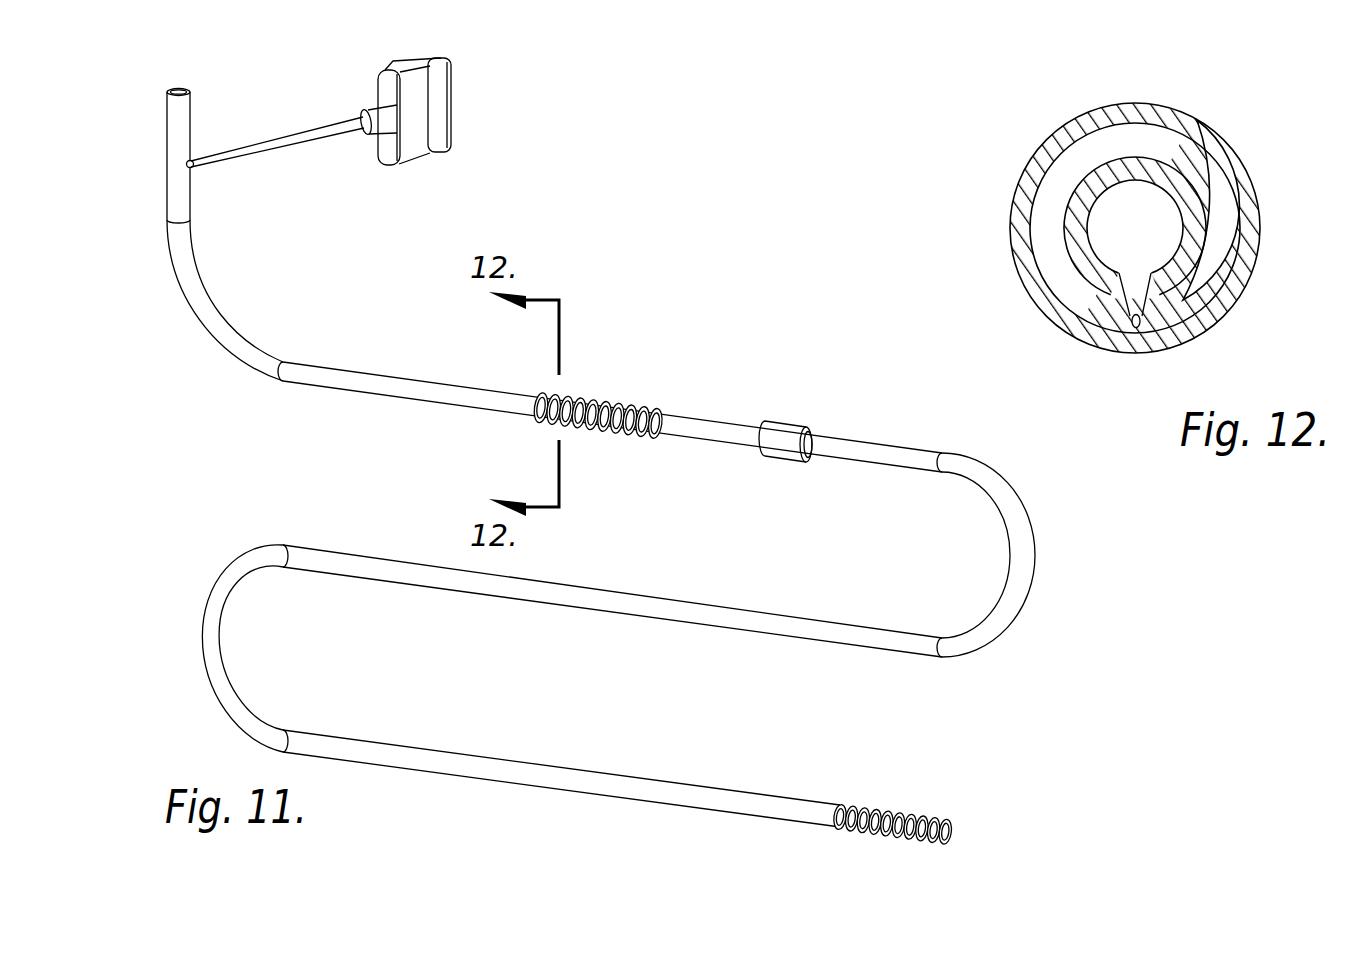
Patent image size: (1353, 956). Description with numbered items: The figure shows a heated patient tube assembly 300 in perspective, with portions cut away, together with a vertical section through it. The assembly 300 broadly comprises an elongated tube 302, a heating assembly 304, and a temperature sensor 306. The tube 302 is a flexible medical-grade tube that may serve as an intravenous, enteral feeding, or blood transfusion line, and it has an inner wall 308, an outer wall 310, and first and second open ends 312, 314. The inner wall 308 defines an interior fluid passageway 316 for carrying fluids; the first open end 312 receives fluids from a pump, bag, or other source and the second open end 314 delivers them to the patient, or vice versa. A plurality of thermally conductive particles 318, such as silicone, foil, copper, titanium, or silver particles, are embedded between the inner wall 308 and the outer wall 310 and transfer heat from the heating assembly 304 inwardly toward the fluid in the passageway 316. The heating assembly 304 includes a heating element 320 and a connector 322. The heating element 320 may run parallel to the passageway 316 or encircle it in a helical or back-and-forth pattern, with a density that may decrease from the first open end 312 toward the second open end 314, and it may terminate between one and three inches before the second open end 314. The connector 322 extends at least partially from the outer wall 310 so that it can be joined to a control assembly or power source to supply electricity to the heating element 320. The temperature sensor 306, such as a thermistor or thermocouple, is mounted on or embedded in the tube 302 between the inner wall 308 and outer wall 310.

In FIG. 11, the heated patient tube assembly 300 is at (632, 449).
In FIG. 11, the elongated tube 302 is at (358, 386).
In FIG. 12, the elongated tube 302 is at (1040, 108).
In FIG. 11, the heating assembly 304 is at (603, 370).
In FIG. 11, the temperature sensor 306 is at (787, 436).
In FIG. 12, the inner wall 308 is at (1180, 342).
In FIG. 12, the outer wall 310 is at (1245, 288).
In FIG. 11, the first open end 312 is at (205, 79).
In FIG. 11, the second open end 314 is at (977, 814).
In FIG. 12, the interior fluid passageway 316 is at (1178, 230).
In FIG. 12, the thermally conductive particles 318 is at (1090, 290).
In FIG. 11, the heating element 320 is at (622, 410).
In FIG. 12, the heating element 320 is at (1053, 265).
In FIG. 11, the connector 322 is at (468, 95).